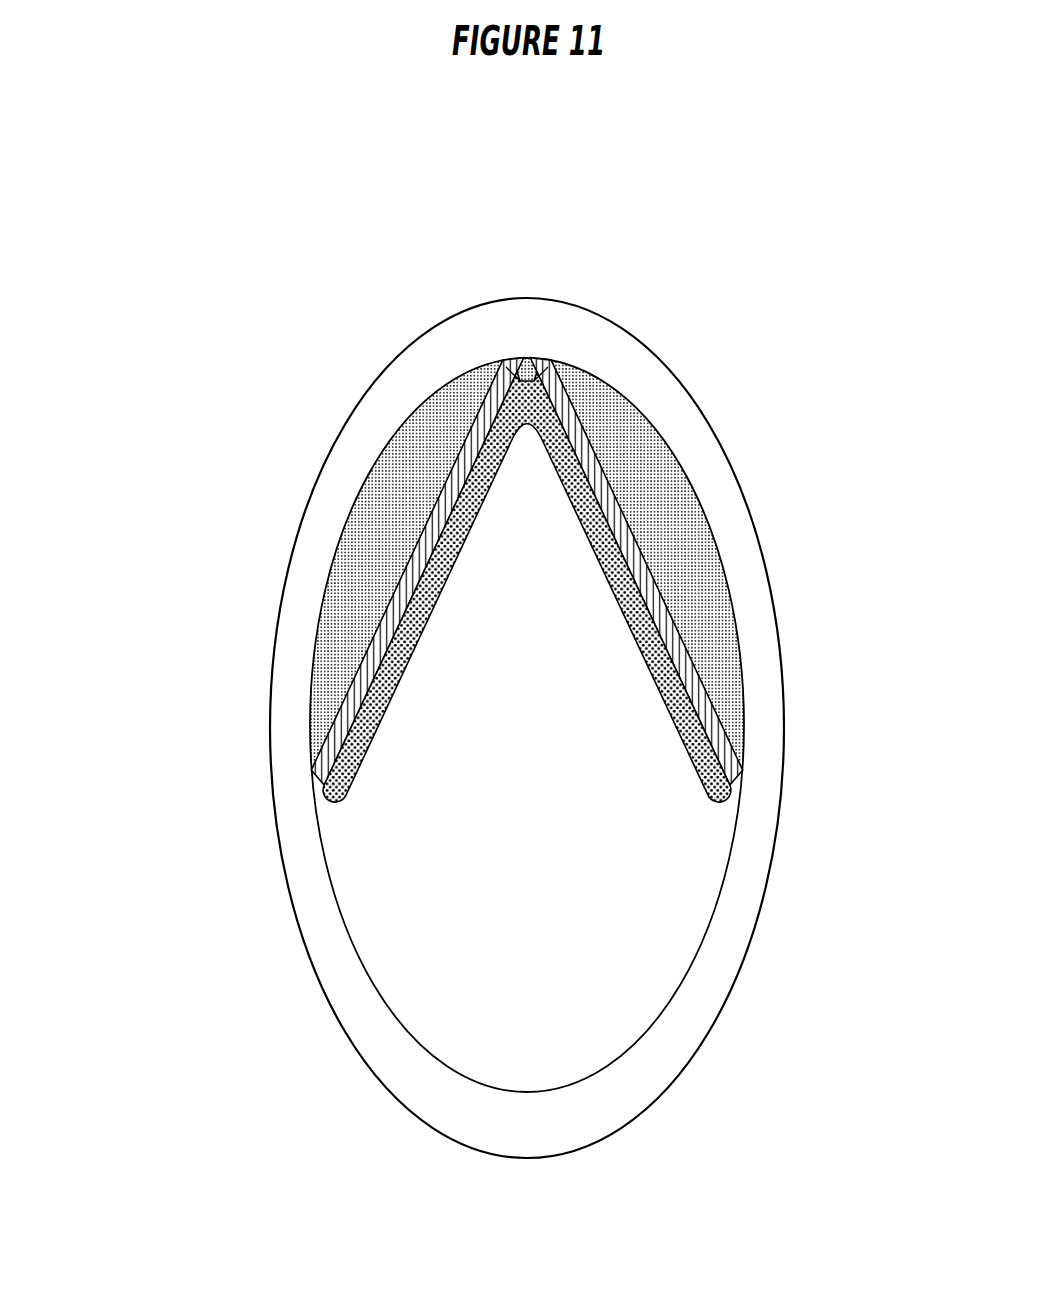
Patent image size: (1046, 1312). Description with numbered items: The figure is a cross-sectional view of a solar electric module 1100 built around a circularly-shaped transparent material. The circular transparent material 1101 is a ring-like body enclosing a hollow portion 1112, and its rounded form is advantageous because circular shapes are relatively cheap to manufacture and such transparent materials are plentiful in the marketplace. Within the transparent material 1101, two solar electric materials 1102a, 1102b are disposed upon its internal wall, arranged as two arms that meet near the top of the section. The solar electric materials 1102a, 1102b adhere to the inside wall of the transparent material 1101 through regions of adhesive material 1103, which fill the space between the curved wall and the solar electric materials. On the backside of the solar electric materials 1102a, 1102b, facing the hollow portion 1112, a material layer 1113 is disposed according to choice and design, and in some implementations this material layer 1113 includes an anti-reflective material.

The solar electric module 1100 is at (142, 272).
The circular transparent material 1101 is at (770, 880).
The solar electric material 1102a is at (312, 768).
The solar electric material 1102b is at (742, 768).
The adhesive material 1103 is at (708, 558).
The hollow portion 1112 is at (554, 788).
The material layer 1113 is at (442, 585).